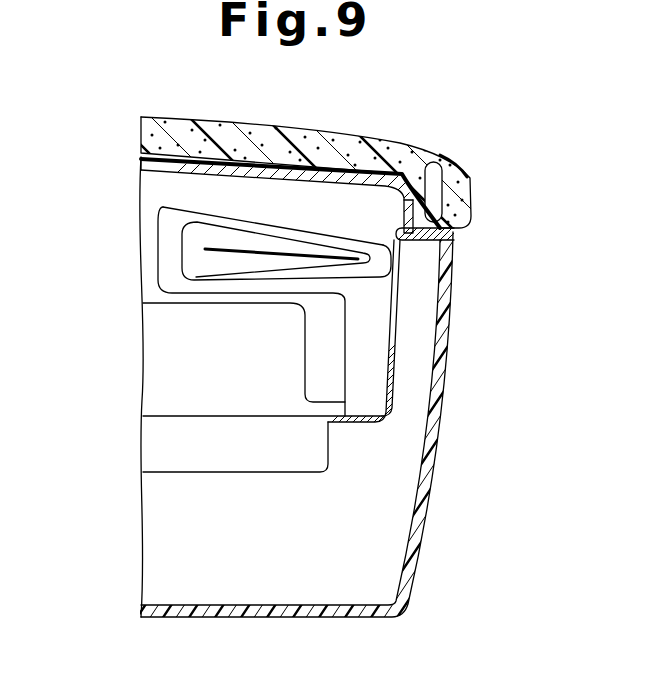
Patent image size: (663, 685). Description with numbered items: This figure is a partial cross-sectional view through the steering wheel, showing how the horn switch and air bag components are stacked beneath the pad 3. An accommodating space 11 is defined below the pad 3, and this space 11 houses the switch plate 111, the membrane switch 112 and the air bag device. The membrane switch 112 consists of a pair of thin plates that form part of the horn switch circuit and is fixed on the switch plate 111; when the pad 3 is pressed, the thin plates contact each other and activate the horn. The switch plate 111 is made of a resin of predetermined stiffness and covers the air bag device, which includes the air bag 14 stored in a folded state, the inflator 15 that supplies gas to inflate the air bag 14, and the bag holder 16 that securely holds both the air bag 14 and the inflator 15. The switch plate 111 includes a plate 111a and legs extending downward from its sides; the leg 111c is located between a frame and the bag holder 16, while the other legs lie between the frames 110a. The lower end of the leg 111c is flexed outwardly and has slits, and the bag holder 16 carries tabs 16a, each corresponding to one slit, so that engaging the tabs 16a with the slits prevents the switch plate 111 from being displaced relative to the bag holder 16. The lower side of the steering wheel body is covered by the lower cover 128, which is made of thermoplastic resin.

The pad 3 is at (240, 128).
The accommodating space 11 is at (280, 172).
The switch plate 111 is at (206, 171).
The plate 111a is at (170, 173).
The leg 111c is at (406, 198).
The membrane switch 112 is at (340, 170).
The frame 110a is at (466, 188).
The air bag 14 is at (158, 250).
The inflator 15 is at (237, 464).
The bag holder 16 is at (400, 310).
The tab 16a is at (447, 247).
The lower cover 128 is at (444, 387).